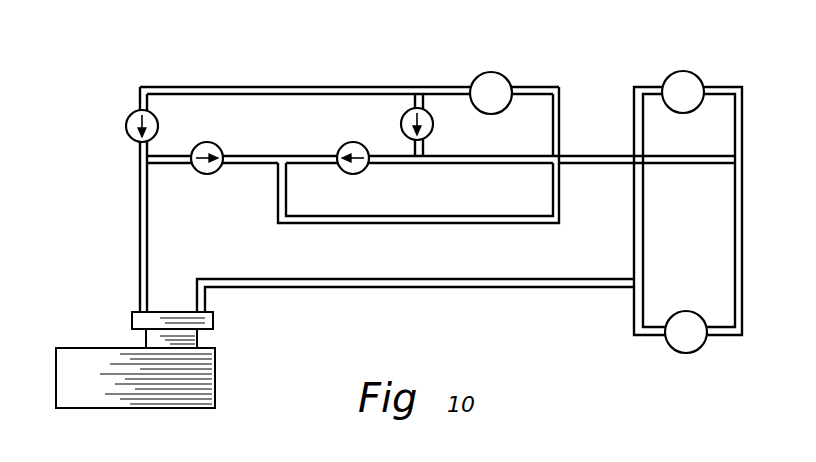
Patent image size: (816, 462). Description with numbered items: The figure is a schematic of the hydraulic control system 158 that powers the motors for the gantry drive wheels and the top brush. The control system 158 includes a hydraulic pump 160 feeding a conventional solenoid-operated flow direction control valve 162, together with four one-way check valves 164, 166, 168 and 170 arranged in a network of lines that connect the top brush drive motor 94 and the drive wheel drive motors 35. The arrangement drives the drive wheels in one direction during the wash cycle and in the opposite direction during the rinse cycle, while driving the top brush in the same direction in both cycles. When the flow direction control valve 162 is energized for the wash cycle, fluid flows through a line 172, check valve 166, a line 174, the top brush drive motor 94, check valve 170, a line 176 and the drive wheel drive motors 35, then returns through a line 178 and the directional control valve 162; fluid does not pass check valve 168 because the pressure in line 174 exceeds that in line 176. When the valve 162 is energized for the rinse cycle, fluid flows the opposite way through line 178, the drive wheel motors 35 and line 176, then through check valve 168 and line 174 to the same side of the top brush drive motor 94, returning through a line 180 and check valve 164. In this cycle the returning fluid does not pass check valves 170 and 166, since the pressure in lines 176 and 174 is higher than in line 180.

The hydraulic motors 35 is at (686, 84).
The top brush drive motor 94 is at (490, 82).
The control system 158 is at (490, 287).
The hydraulic pump 160 is at (185, 371).
The flow direction control valve 162 is at (213, 320).
The check valve 164 is at (126, 117).
The check valve 166 is at (211, 143).
The check valve 168 is at (356, 128).
The check valve 170 is at (435, 126).
The line 172 is at (139, 248).
The line 174 is at (441, 229).
The line 176 is at (612, 145).
The line 178 is at (582, 262).
The line 180 is at (315, 87).